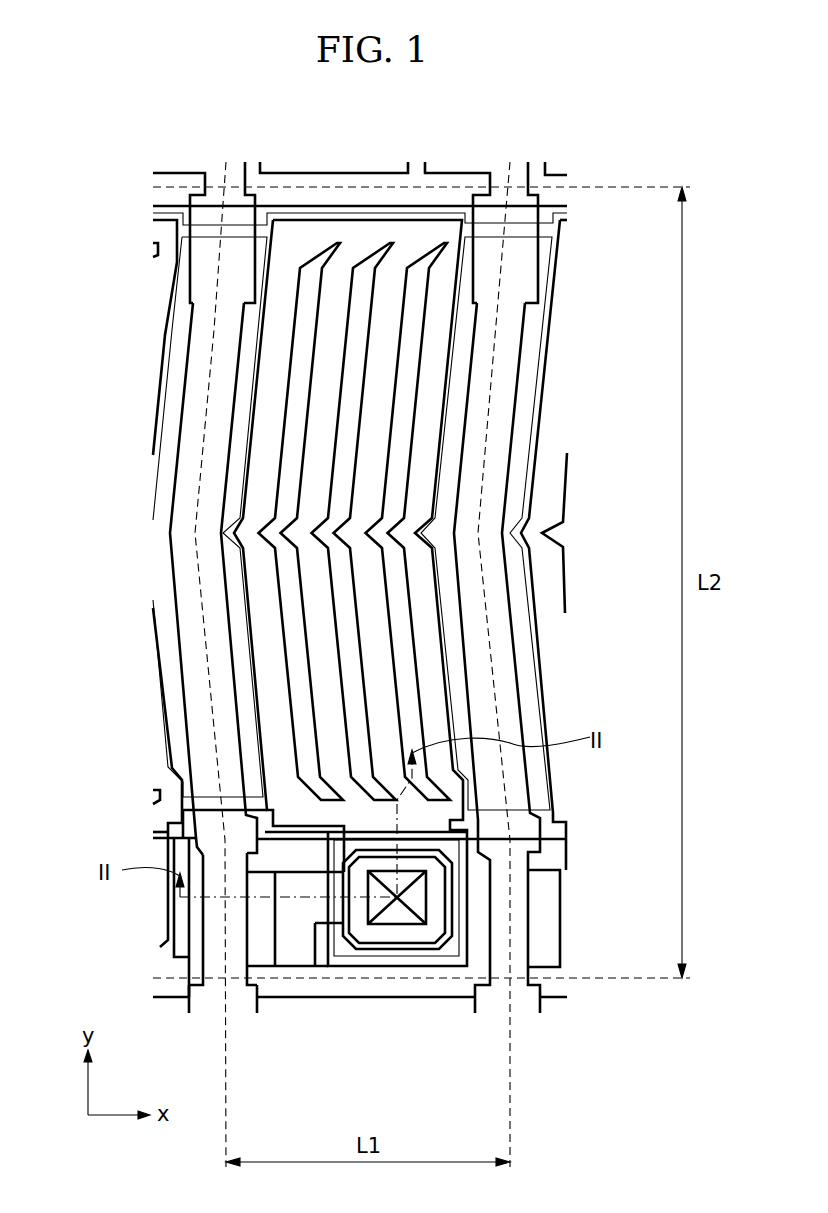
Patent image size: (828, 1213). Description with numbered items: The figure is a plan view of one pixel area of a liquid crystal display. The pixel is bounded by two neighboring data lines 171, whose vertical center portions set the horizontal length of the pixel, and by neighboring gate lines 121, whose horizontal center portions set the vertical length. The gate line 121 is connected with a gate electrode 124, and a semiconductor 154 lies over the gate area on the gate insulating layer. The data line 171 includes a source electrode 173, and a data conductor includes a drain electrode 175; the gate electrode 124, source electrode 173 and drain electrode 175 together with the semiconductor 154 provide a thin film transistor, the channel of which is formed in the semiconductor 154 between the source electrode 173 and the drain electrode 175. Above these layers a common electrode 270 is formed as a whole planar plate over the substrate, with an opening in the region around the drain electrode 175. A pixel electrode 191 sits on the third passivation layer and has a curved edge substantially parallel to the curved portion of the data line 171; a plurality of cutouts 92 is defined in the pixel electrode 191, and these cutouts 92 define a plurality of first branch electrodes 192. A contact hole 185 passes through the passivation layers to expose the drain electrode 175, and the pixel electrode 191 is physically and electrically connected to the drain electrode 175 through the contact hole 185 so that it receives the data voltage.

The cutout 92 is at (398, 477).
The gate line 121 is at (432, 972).
The gate electrode 124 is at (190, 925).
The semiconductor 154 is at (267, 968).
The data line 171 is at (157, 570).
The source electrode 173 is at (247, 932).
The drain electrode 175 is at (320, 958).
The contact hole 185 is at (386, 924).
The pixel electrode 191 is at (470, 803).
The first branch electrode 192 is at (365, 663).
The common electrode 270 is at (448, 418).